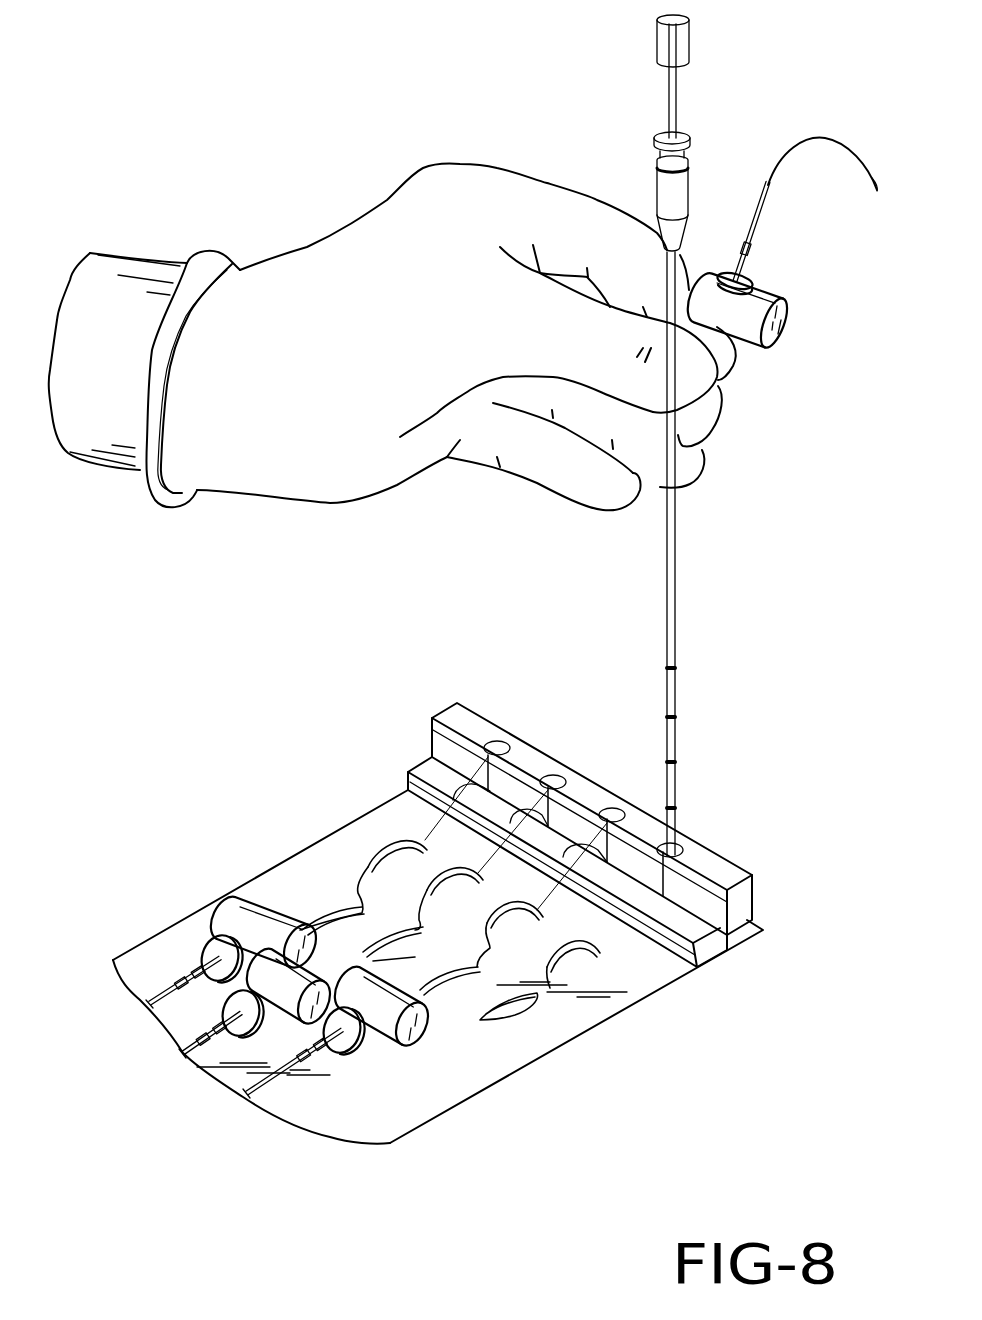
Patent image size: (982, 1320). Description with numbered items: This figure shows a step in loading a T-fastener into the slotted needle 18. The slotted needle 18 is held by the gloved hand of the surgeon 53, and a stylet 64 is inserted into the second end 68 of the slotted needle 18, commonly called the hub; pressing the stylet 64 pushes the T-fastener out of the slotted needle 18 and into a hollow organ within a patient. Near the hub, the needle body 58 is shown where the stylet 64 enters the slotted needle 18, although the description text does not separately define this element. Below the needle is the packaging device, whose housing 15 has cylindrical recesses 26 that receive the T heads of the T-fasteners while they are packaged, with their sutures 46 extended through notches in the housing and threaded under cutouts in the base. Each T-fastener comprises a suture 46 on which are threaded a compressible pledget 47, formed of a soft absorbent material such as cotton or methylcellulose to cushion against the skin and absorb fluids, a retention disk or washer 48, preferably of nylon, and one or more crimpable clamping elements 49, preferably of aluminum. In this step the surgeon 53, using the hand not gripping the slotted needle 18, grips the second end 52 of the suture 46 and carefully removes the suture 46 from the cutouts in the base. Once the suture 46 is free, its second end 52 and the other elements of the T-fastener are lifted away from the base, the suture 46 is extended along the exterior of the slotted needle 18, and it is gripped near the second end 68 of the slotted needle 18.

The housing 15 is at (700, 860).
The slotted needle 18 is at (677, 578).
The cylindrical recesses 26 is at (498, 752).
The suture 46 is at (822, 137).
The compressible pledget 47 is at (785, 330).
The retention disk or washer 48 is at (747, 278).
The crimpable clamping elements 49 is at (760, 221).
The second end of the suture 52 is at (877, 190).
The surgeon 53 is at (395, 208).
The hub 58 is at (660, 173).
The stylet 64 is at (685, 44).
The second end of the slotted needle 68 is at (685, 128).